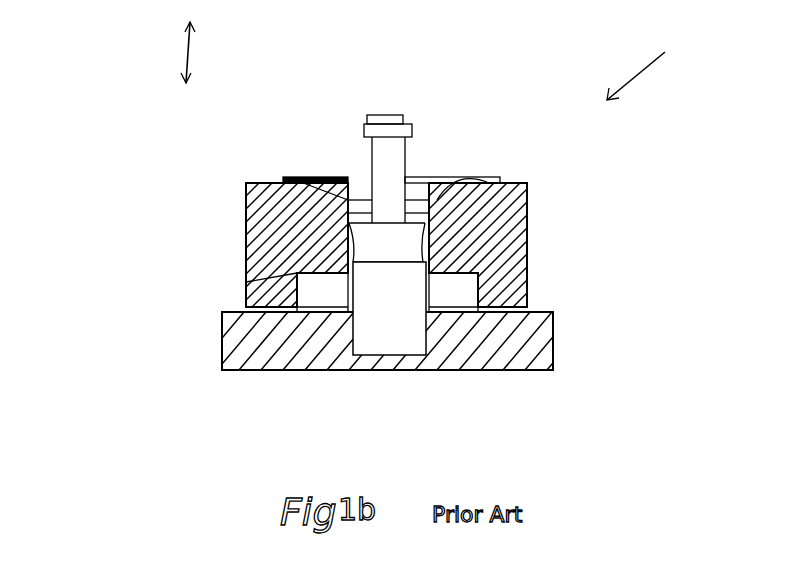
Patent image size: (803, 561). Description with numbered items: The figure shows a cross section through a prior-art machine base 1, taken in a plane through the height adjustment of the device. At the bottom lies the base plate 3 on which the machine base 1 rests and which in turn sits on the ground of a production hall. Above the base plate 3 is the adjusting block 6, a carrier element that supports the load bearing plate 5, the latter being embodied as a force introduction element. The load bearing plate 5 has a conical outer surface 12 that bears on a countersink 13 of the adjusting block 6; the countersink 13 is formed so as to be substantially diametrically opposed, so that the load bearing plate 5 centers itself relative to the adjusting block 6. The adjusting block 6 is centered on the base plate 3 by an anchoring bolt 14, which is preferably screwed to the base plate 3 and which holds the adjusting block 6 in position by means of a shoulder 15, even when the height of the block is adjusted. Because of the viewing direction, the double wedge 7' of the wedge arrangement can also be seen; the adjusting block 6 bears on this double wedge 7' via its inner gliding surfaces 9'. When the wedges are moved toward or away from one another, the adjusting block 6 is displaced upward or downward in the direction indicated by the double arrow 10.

The machine base 1 is at (643, 65).
The double arrow 10 is at (180, 52).
The load bearing plate 5 is at (372, 236).
The conical outer surface 12 is at (325, 177).
The countersink 13 is at (330, 218).
The adjusting block 6 is at (455, 262).
The inner gliding surface 9' is at (359, 324).
The shoulder 15 is at (246, 282).
The base plate 3 is at (553, 344).
The double wedge 7' is at (340, 368).
The anchoring bolt 14 is at (373, 327).